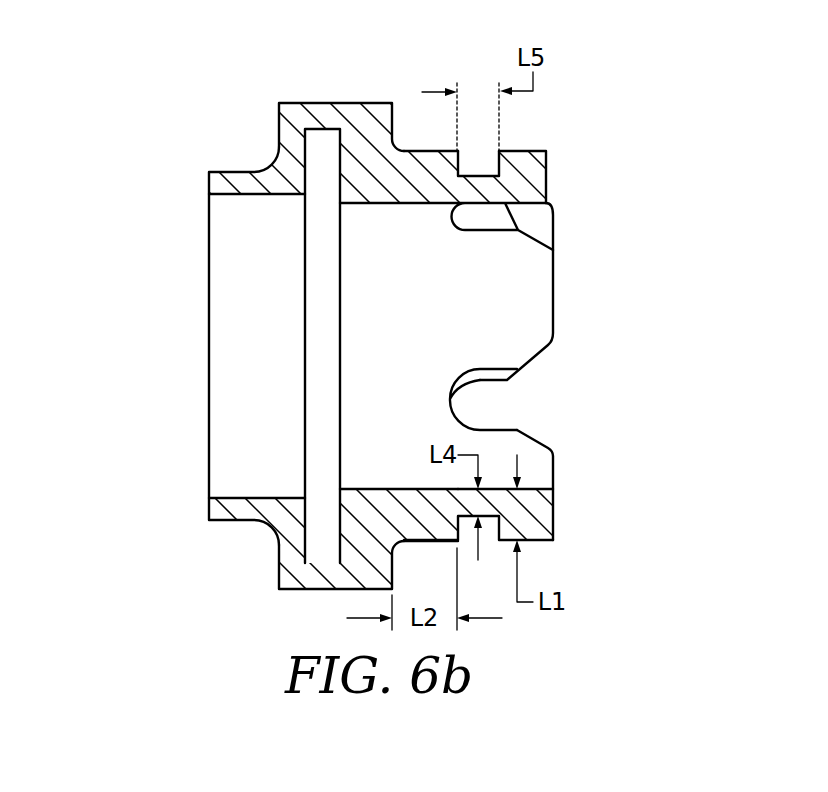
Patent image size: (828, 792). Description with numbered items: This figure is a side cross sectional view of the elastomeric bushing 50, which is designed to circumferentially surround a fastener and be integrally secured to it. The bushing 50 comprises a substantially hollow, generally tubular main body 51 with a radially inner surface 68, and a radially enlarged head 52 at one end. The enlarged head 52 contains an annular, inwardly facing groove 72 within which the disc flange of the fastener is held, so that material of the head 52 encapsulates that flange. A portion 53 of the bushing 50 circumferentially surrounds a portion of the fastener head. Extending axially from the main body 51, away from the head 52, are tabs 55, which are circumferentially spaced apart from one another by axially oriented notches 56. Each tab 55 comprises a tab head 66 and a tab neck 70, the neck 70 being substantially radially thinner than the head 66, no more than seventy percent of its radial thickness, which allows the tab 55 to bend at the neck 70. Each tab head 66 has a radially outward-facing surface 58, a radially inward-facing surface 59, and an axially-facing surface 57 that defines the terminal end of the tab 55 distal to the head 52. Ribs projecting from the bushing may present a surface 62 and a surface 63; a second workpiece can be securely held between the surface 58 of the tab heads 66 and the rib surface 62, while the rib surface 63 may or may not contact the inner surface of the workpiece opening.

The bushing 50 is at (237, 95).
The main body 51 is at (218, 425).
The radially enlarged head 52 is at (303, 585).
The portion 53 is at (220, 181).
The tab 55 is at (492, 190).
The axially-oriented notch 56 is at (455, 395).
The axially-facing surface 57 is at (553, 516).
The radially outward-facing surface 58 is at (540, 545).
The radially inward-facing surface 59 is at (530, 488).
The surface of ribs 62 is at (393, 108).
The surface of ribs 63 is at (423, 150).
The tab head 66 is at (522, 156).
The radially inner surface 68 is at (405, 489).
The tab neck 70 is at (481, 187).
The inwardly facing groove 72 is at (321, 138).